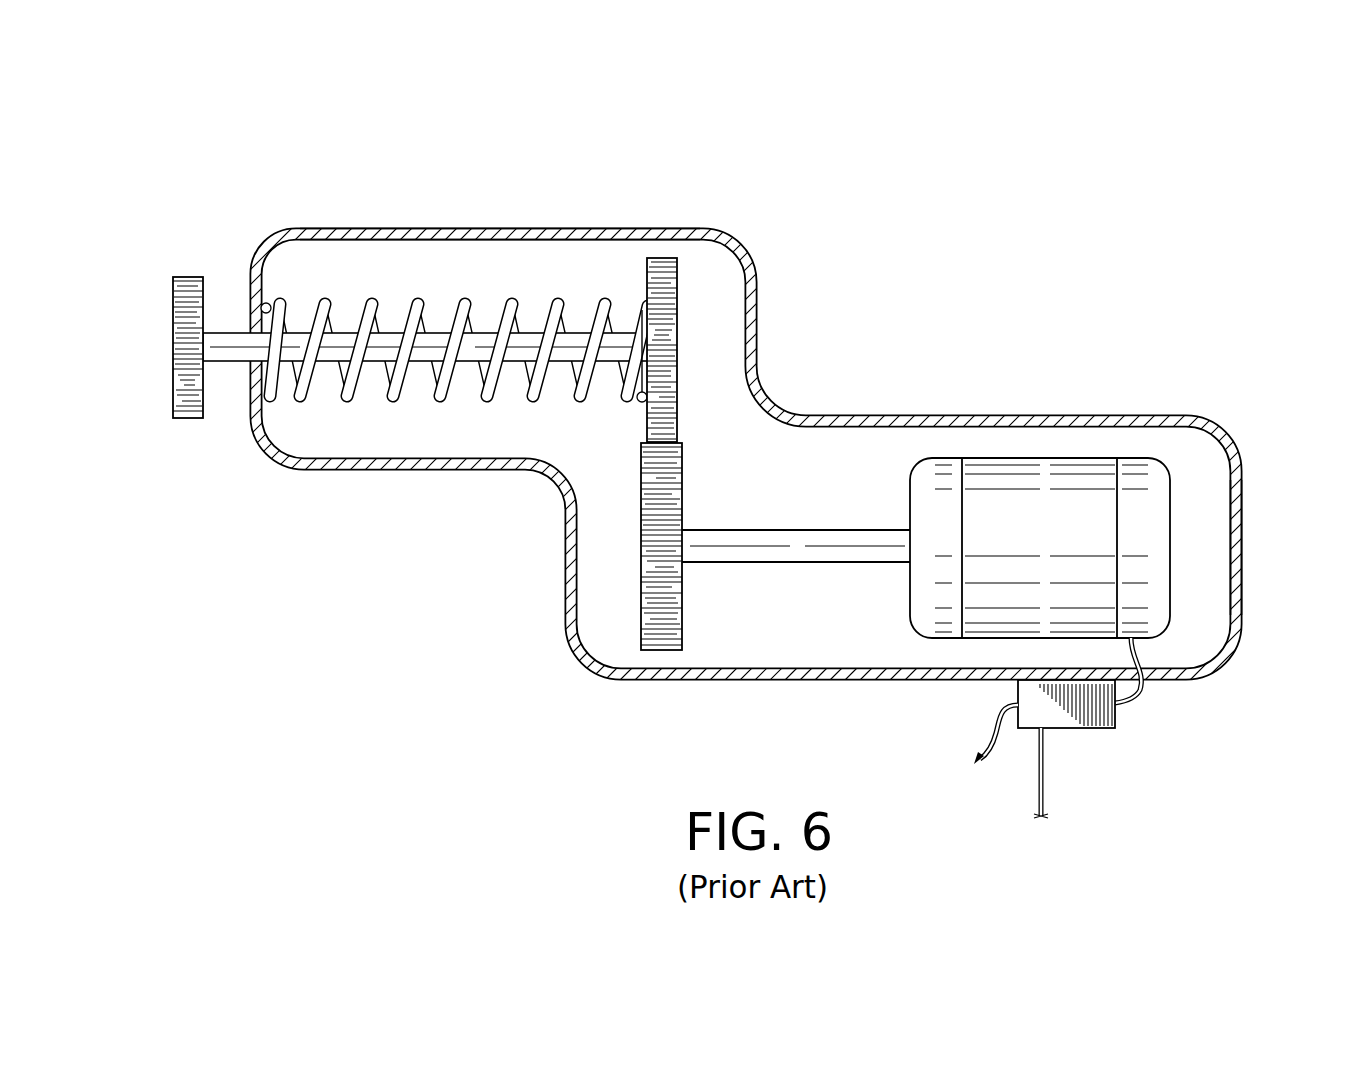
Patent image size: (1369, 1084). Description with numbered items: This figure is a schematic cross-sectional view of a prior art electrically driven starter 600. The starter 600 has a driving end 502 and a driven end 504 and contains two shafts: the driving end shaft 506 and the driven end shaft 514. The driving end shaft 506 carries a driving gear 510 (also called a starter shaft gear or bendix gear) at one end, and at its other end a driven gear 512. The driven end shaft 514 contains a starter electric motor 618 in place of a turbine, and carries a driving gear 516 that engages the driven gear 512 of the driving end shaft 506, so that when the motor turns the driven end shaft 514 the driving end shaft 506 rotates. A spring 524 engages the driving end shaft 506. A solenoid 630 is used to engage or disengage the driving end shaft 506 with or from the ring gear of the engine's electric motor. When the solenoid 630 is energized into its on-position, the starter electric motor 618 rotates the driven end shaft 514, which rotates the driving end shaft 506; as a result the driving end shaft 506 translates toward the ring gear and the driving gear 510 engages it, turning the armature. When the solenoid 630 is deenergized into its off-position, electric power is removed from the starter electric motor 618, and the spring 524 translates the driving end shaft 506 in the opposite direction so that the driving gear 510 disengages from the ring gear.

The starter 600 is at (684, 412).
The driving end 502 is at (450, 203).
The driven end 504 is at (1290, 473).
The driving end shaft 506 is at (231, 310).
The driving gear 510 is at (190, 412).
The driven gear 512 is at (668, 333).
The driven end shaft 514 is at (813, 542).
The driving gear of the driven end shaft 516 is at (660, 630).
The spring 524 is at (404, 280).
The starter electric motor 618 is at (1023, 482).
The solenoid 630 is at (1067, 718).